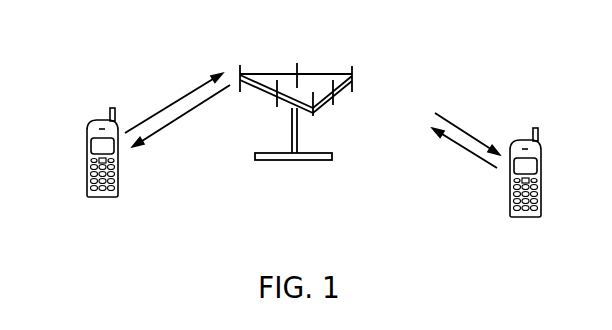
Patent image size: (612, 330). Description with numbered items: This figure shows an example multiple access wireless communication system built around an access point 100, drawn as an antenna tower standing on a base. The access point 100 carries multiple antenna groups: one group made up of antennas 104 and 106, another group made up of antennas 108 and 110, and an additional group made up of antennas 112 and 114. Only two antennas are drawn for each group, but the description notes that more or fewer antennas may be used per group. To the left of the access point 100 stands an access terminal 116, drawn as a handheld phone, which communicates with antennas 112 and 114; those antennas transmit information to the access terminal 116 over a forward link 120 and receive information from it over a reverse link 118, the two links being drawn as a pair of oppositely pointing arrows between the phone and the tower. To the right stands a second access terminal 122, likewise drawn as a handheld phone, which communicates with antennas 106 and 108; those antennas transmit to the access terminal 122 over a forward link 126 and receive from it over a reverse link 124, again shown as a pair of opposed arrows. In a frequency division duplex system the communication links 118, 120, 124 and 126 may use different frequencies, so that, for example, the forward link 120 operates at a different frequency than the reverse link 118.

The access point 100 is at (300, 161).
The antenna 104 is at (313, 112).
The antenna 106 is at (340, 100).
The antenna 108 is at (355, 87).
The antenna 110 is at (298, 63).
The antenna 112 is at (240, 70).
The antenna 114 is at (277, 105).
The access terminal 116 is at (87, 143).
The reverse link 118 is at (180, 100).
The forward link 120 is at (172, 118).
The access terminal 122 is at (540, 163).
The reverse link 124 is at (470, 155).
The forward link 126 is at (467, 135).